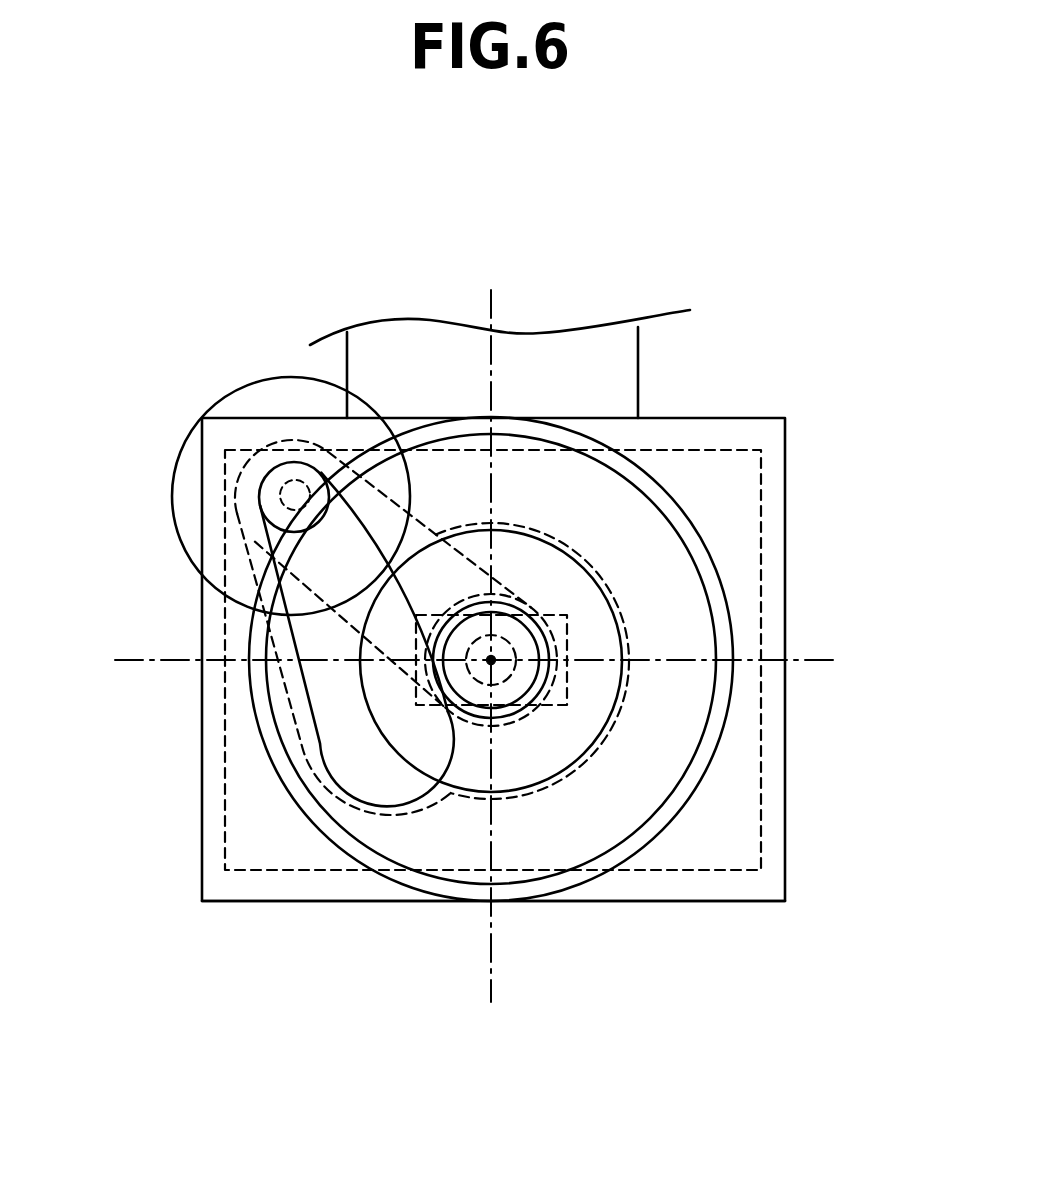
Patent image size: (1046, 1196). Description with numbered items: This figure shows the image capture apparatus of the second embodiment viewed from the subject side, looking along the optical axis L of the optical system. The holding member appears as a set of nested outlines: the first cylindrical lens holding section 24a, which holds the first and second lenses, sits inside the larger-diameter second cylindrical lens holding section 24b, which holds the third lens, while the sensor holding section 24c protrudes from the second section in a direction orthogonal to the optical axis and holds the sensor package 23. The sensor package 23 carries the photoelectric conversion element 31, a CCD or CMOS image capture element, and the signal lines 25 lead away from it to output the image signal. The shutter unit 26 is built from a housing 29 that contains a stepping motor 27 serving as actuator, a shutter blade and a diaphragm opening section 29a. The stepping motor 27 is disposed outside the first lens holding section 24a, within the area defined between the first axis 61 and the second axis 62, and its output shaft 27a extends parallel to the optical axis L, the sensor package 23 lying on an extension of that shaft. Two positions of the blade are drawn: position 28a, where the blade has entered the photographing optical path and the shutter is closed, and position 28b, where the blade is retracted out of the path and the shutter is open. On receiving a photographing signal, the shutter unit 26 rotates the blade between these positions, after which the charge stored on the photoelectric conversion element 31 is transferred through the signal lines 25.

The sensor package 23 is at (720, 448).
The first cylindrical lens holding section 24a is at (575, 555).
The second cylindrical lens holding section 24b is at (738, 635).
The sensor holding section 24c is at (710, 903).
The signal lines 25 is at (608, 343).
The shutter unit 26 is at (351, 462).
The stepping motor 27 is at (248, 383).
The output shaft 27a is at (288, 498).
The position of the shutter blade when closed 28a is at (466, 556).
The position of the shutter blade when open 28b is at (407, 797).
The housing 29 is at (357, 797).
The diaphragm opening section 29a is at (517, 667).
The photoelectric conversion element 31 is at (557, 610).
The first axis 61 is at (492, 312).
The second axis 62 is at (237, 670).
The optical axis L is at (491, 660).